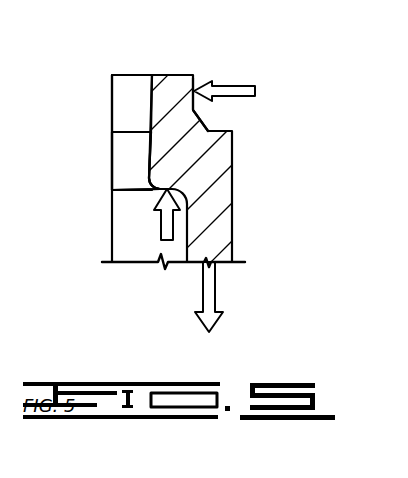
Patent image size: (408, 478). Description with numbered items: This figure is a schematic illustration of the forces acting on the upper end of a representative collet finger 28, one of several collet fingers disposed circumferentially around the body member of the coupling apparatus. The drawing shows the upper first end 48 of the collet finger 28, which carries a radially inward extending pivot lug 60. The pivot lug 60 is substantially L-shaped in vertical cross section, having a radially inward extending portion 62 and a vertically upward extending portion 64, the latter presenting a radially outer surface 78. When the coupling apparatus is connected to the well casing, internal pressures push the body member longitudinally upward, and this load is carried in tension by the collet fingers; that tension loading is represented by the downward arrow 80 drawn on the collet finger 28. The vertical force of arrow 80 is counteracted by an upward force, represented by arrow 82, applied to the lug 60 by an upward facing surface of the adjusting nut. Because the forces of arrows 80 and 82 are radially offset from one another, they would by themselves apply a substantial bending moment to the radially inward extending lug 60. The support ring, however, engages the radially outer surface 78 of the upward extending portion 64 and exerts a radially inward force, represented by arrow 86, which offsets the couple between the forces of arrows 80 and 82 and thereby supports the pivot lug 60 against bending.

The collet finger 28 is at (215, 231).
The upper first end 48 is at (172, 155).
The pivot lug 60 is at (95, 168).
The radially inward extending portion 62 is at (117, 161).
The vertically upward extending portion 64 is at (168, 101).
The radially outer surface 78 is at (194, 98).
The arrow representing tension loading 80 is at (215, 289).
The arrow representing upward force 82 is at (160, 223).
The arrow representing radially inward force 86 is at (229, 86).